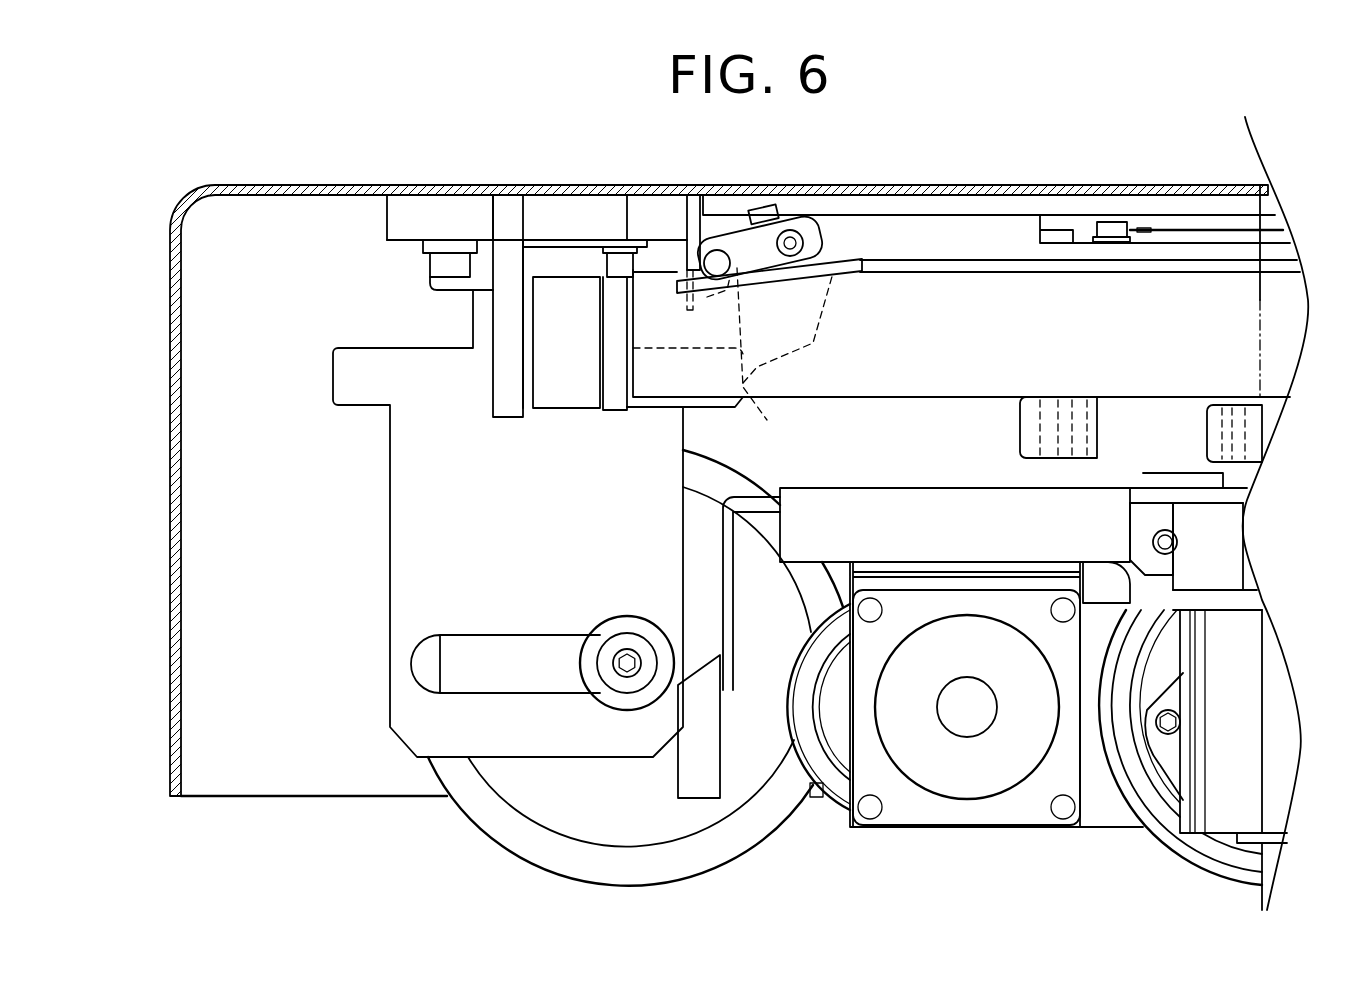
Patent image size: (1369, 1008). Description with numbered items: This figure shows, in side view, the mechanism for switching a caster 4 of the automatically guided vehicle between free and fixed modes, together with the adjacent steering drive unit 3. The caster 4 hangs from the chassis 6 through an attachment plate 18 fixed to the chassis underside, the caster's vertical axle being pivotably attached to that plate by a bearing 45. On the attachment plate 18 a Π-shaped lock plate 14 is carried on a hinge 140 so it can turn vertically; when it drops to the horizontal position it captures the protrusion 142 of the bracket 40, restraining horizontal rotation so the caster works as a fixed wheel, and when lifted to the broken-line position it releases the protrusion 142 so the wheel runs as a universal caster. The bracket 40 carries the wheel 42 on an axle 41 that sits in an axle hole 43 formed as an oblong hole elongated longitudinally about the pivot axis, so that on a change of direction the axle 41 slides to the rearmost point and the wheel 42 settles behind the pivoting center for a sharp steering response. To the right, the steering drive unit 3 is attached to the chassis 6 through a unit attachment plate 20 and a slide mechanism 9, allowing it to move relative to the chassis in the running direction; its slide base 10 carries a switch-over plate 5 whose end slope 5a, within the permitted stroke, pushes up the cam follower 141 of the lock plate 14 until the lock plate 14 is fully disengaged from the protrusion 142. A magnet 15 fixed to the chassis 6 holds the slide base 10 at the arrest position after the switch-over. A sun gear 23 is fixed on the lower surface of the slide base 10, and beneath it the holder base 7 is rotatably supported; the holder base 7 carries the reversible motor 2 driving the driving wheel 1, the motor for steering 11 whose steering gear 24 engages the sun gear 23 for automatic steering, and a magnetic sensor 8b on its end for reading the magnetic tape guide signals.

The driving wheel 1 is at (1165, 830).
The reversible motor 2 is at (963, 790).
The steering drive unit 3 is at (1265, 553).
The caster 4 is at (550, 570).
The switch-over plate 5 is at (935, 275).
The slope 5a is at (740, 282).
The chassis 6 is at (343, 183).
The holder base 7 is at (855, 515).
The magnetic sensor 8b is at (723, 775).
The slide mechanism 9 is at (1187, 225).
The slide base 10 is at (995, 310).
The motor for steering 11 is at (1275, 795).
The lock plate 14 is at (733, 230).
The magnet 15 is at (557, 290).
The attachment plate 18 is at (457, 215).
The unit attachment plate 20 is at (948, 207).
The sun gear 23 is at (1030, 430).
The steering gear 24 is at (1255, 440).
The bracket 40 is at (430, 492).
The axle 41 is at (627, 650).
The wheel 42 is at (487, 812).
The axle hole 43 is at (497, 650).
The bearing 45 is at (440, 285).
The hinge 140 is at (705, 263).
The cam follower 141 is at (832, 262).
The protrusion 142 is at (772, 362).